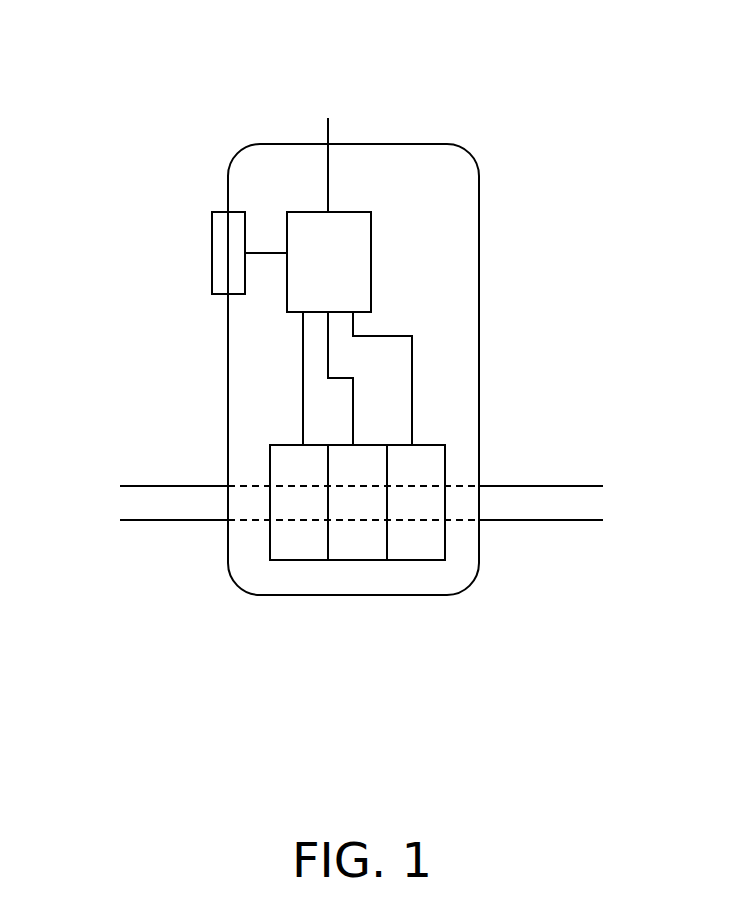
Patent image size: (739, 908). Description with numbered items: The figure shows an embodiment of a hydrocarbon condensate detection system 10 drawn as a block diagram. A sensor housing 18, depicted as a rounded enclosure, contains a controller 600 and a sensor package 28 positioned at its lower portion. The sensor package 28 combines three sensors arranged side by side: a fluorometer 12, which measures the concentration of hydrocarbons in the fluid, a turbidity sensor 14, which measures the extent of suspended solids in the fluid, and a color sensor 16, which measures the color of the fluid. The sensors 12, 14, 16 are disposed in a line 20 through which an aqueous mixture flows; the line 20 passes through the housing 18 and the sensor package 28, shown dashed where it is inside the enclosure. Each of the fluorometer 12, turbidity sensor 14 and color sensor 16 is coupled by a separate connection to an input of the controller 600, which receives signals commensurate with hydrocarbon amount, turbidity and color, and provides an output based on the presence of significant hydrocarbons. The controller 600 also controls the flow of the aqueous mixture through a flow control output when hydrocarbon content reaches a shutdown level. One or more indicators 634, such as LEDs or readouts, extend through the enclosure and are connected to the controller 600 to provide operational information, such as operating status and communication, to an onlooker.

The hydrocarbon condensate detection system 10 is at (101, 98).
The fluorometer 12 is at (295, 552).
The turbidity sensor 14 is at (353, 552).
The color sensor 16 is at (412, 552).
The sensor housing 18 is at (479, 310).
The line 20 is at (160, 510).
The sensor package 28 is at (270, 462).
The controller 600 is at (329, 262).
The indicators 634 is at (212, 252).